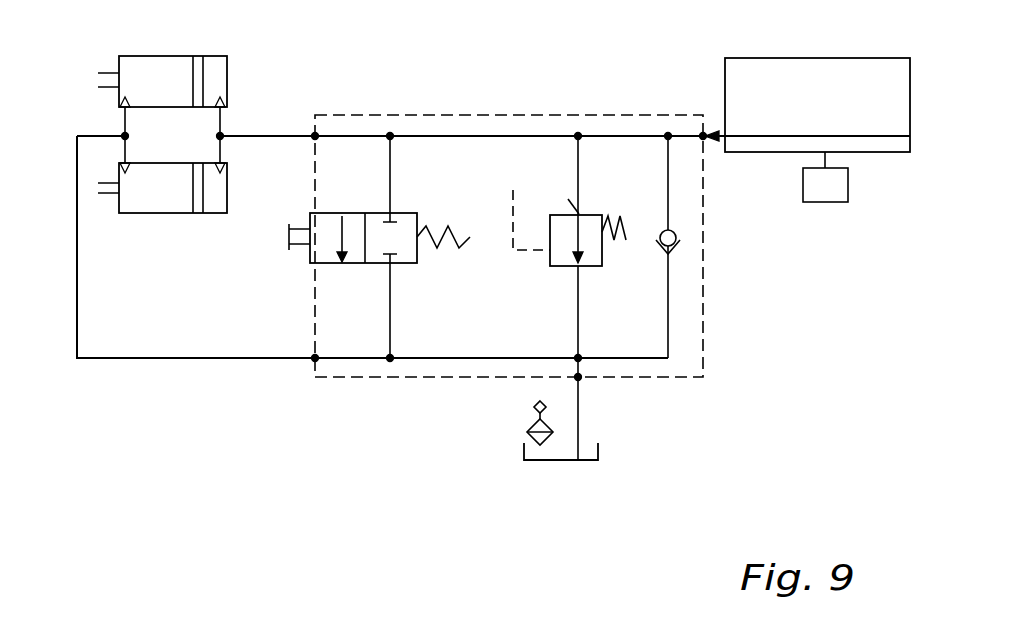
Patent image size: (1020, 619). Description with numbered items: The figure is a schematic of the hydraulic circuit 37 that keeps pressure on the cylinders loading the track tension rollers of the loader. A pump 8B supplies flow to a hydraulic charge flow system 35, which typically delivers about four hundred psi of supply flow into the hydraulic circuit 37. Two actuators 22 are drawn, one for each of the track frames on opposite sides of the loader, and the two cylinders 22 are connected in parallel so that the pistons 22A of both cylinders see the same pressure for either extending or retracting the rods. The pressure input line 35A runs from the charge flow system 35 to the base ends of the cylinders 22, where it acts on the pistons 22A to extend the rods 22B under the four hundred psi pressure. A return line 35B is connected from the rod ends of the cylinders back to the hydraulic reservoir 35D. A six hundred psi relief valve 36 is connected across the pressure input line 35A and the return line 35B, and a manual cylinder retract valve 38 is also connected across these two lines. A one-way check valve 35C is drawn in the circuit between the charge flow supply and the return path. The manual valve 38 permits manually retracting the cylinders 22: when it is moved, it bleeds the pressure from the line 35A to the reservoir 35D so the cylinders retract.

The actuator 22 is at (152, 56).
The piston 22A is at (200, 73).
The rod 22B is at (110, 78).
The hydraulic circuit 37 is at (352, 95).
The manual cylinder retract valve 38 is at (320, 222).
The 600 psi relief valve 36 is at (584, 218).
The hydraulic charge flow system 35 is at (748, 70).
The pressure input line 35A is at (617, 136).
The return line 35B is at (95, 360).
The one-way check valve 35C is at (675, 233).
The hydraulic reservoir 35D is at (600, 452).
The pump 8B is at (838, 198).